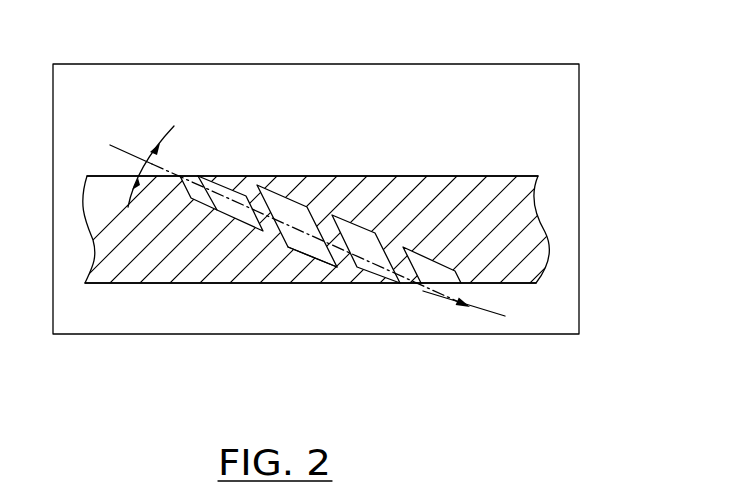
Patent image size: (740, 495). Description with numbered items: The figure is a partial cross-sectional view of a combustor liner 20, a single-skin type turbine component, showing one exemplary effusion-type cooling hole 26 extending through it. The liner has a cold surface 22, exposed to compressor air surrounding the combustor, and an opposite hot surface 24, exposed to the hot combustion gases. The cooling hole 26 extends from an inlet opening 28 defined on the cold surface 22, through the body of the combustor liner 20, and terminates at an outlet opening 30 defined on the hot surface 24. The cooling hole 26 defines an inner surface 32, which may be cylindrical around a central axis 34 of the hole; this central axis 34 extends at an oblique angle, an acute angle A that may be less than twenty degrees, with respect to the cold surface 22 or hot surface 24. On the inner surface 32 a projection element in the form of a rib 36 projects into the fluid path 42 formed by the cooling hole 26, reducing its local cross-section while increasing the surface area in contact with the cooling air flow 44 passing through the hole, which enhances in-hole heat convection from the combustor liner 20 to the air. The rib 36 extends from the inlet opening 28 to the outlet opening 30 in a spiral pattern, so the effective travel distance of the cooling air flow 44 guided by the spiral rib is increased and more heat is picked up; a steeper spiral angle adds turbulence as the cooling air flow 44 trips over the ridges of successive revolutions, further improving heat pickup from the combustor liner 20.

The combustor liner 20 is at (546, 232).
The cold surface 22 is at (427, 176).
The hot surface 24 is at (133, 284).
The cooling hole 26 is at (288, 203).
The inlet opening 28 is at (217, 176).
The outlet opening 30 is at (418, 268).
The inner surface 32 is at (310, 256).
The central axis 34 is at (121, 149).
The rib 36 is at (270, 226).
The fluid path 42 is at (376, 266).
The cooling air flow 44 is at (208, 172).